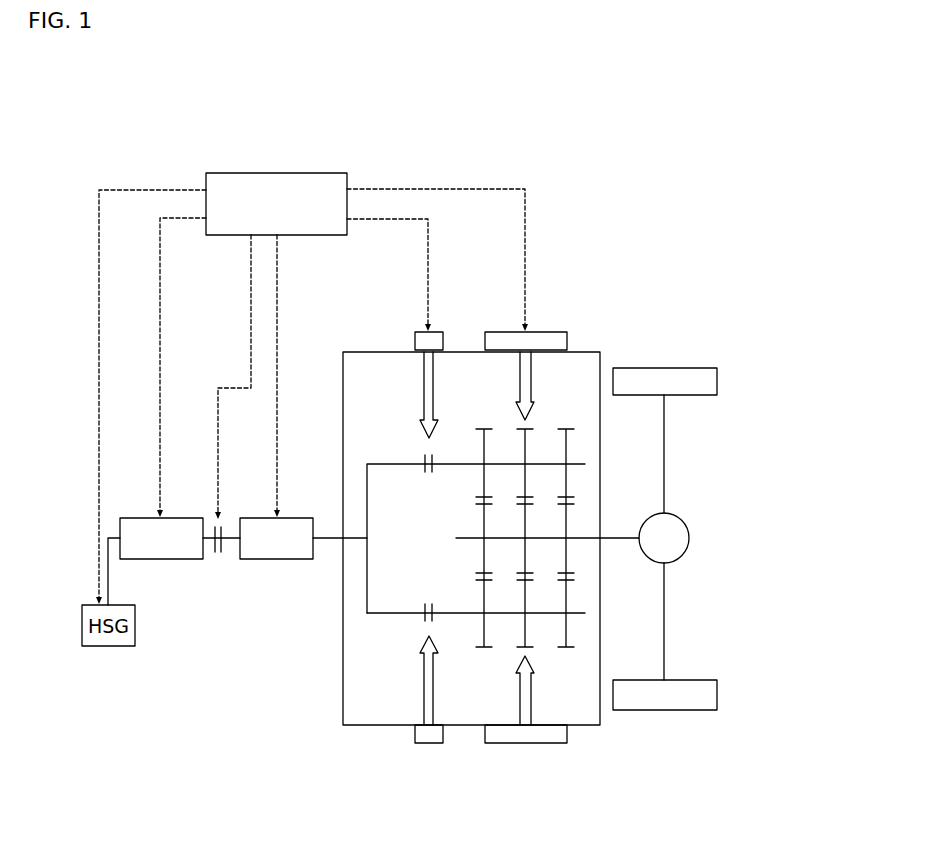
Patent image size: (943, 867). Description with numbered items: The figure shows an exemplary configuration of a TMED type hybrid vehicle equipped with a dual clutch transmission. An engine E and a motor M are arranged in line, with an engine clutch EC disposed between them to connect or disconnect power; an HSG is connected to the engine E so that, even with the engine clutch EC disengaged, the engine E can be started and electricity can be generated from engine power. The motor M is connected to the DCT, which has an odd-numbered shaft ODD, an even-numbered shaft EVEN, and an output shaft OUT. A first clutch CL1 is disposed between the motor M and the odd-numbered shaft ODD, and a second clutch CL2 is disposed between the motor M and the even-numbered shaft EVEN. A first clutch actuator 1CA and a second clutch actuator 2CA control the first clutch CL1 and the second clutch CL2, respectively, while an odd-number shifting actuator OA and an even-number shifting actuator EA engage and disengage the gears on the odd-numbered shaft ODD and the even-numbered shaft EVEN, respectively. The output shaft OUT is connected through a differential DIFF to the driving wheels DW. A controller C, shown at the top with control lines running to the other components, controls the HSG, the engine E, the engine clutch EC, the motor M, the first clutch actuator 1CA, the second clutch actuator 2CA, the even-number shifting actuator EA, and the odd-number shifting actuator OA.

The controller C is at (276, 173).
The engine E is at (158, 560).
The engine clutch EC is at (218, 566).
The motor M is at (275, 560).
The element DCT is at (368, 727).
The first clutch CL1 is at (412, 453).
The second clutch CL2 is at (408, 624).
The first clutch actuator 1CA is at (438, 332).
The second clutch actuator 2CA is at (428, 745).
The odd-number shifting actuator OA is at (540, 332).
The even-number shifting actuator EA is at (520, 745).
The odd-numbered shaft ODD is at (585, 464).
The even-numbered shaft EVEN is at (585, 613).
The output shaft OUT is at (618, 535).
The differential DIFF is at (690, 538).
The driving wheels DW is at (660, 368).